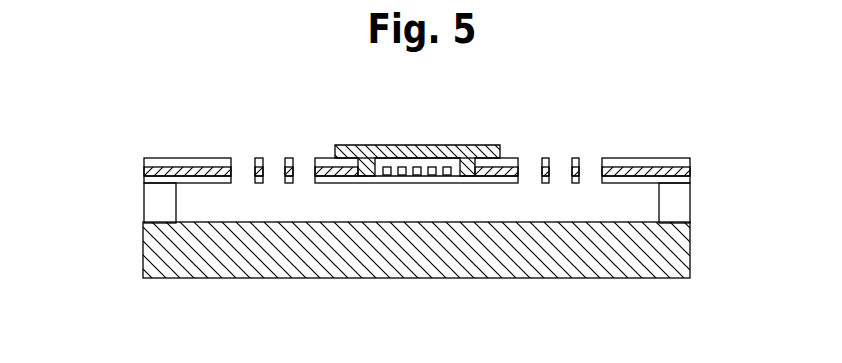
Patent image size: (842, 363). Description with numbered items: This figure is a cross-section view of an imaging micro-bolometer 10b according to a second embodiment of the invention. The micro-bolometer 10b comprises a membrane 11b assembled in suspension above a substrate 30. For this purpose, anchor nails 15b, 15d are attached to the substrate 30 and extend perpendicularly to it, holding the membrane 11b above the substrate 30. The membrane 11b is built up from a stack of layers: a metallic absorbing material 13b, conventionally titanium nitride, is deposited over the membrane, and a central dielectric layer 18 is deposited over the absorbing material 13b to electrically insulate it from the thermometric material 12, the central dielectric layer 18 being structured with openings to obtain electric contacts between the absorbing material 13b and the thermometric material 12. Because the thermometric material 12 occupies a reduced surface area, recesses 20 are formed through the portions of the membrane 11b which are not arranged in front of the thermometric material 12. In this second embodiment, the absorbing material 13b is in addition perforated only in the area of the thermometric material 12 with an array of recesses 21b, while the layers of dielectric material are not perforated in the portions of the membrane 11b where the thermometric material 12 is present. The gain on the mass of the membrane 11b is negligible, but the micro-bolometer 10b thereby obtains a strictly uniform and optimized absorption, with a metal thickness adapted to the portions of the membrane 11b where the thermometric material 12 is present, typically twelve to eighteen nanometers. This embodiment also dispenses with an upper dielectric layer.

The micro-bolometer 10b is at (56, 132).
The membrane 11b is at (532, 128).
The thermometric material 12 is at (445, 153).
The absorbing material 13b is at (624, 170).
The anchor nail 15b is at (158, 203).
The anchor nail 15d is at (673, 203).
The central dielectric layer 18 is at (183, 163).
The recesses 20 is at (276, 167).
The recesses 21b is at (381, 175).
The substrate 30 is at (342, 251).